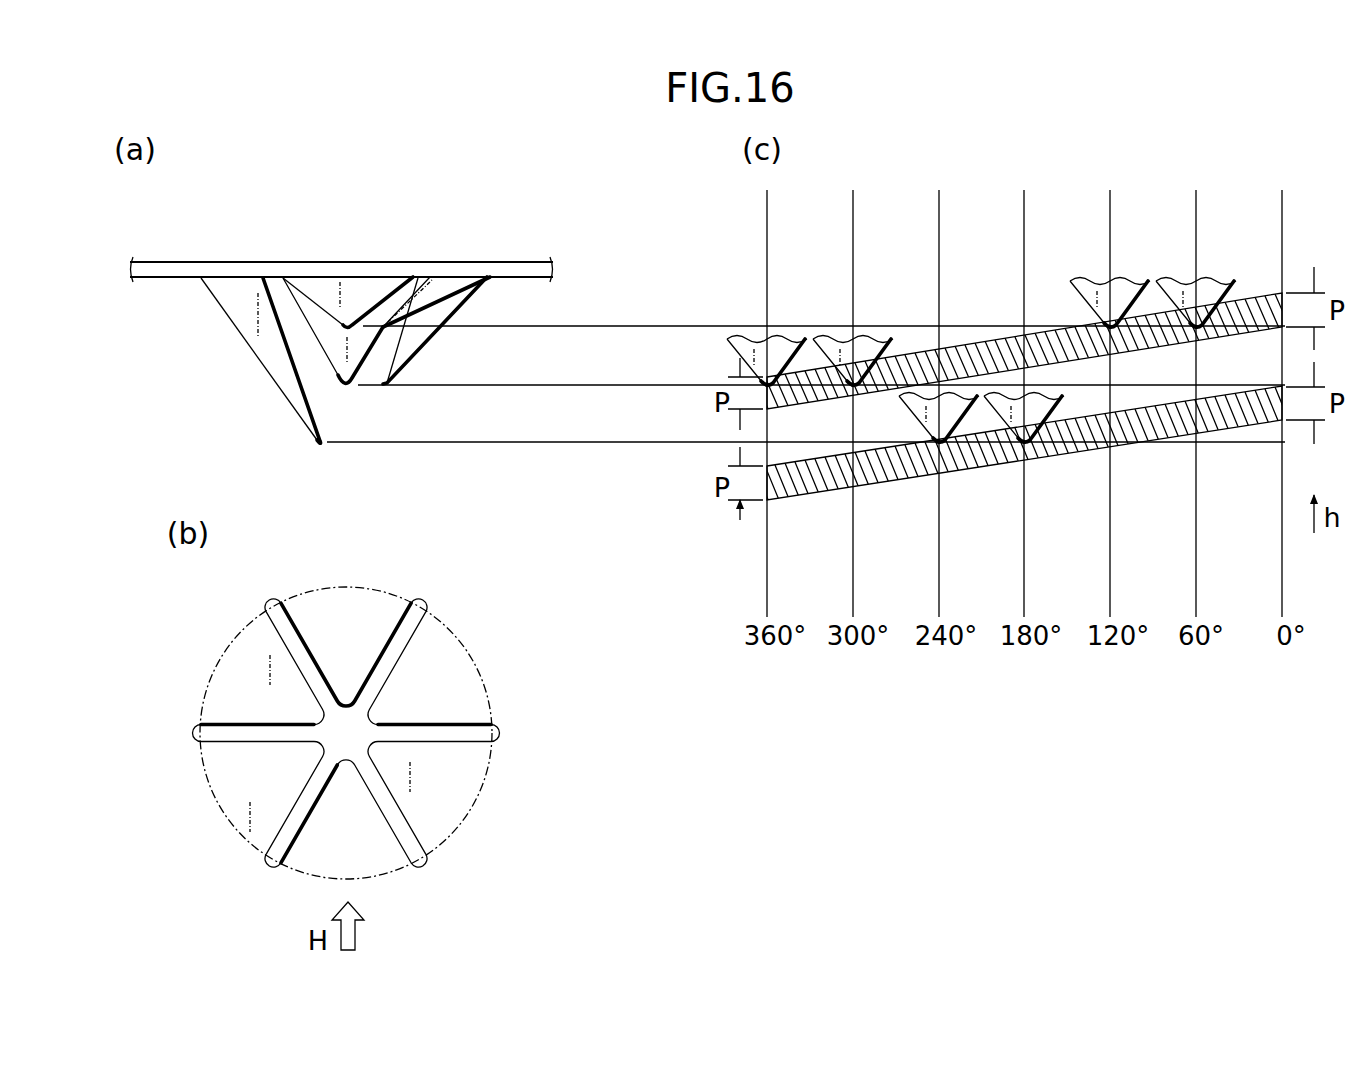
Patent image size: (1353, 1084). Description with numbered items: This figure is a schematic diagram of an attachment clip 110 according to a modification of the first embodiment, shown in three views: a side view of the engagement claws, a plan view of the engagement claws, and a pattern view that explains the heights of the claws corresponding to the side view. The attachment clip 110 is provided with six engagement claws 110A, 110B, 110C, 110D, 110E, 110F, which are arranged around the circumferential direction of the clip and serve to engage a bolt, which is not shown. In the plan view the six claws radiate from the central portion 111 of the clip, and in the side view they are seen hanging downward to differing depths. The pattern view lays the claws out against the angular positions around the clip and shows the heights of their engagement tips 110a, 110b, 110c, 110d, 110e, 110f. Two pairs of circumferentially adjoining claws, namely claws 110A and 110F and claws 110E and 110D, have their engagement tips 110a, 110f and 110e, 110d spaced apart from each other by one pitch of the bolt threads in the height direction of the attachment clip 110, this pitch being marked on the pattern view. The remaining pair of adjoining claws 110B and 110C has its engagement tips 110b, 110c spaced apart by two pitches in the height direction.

The attachment clip 110 is at (507, 208).
The plate portion 111 is at (437, 262).
The engagement claw 110A is at (445, 301).
The engagement claw 110B is at (358, 329).
The engagement claw 110C is at (237, 333).
The engagement claw 110D is at (955, 397).
The engagement claw 110E is at (323, 365).
The engagement claw 110F is at (433, 347).
The engagement tip 110a is at (1196, 327).
The engagement tip 110b is at (1110, 327).
The engagement tip 110c is at (1024, 442).
The engagement tip 110d is at (939, 442).
The engagement tip 110e is at (853, 385).
The engagement tip 110f is at (767, 385).